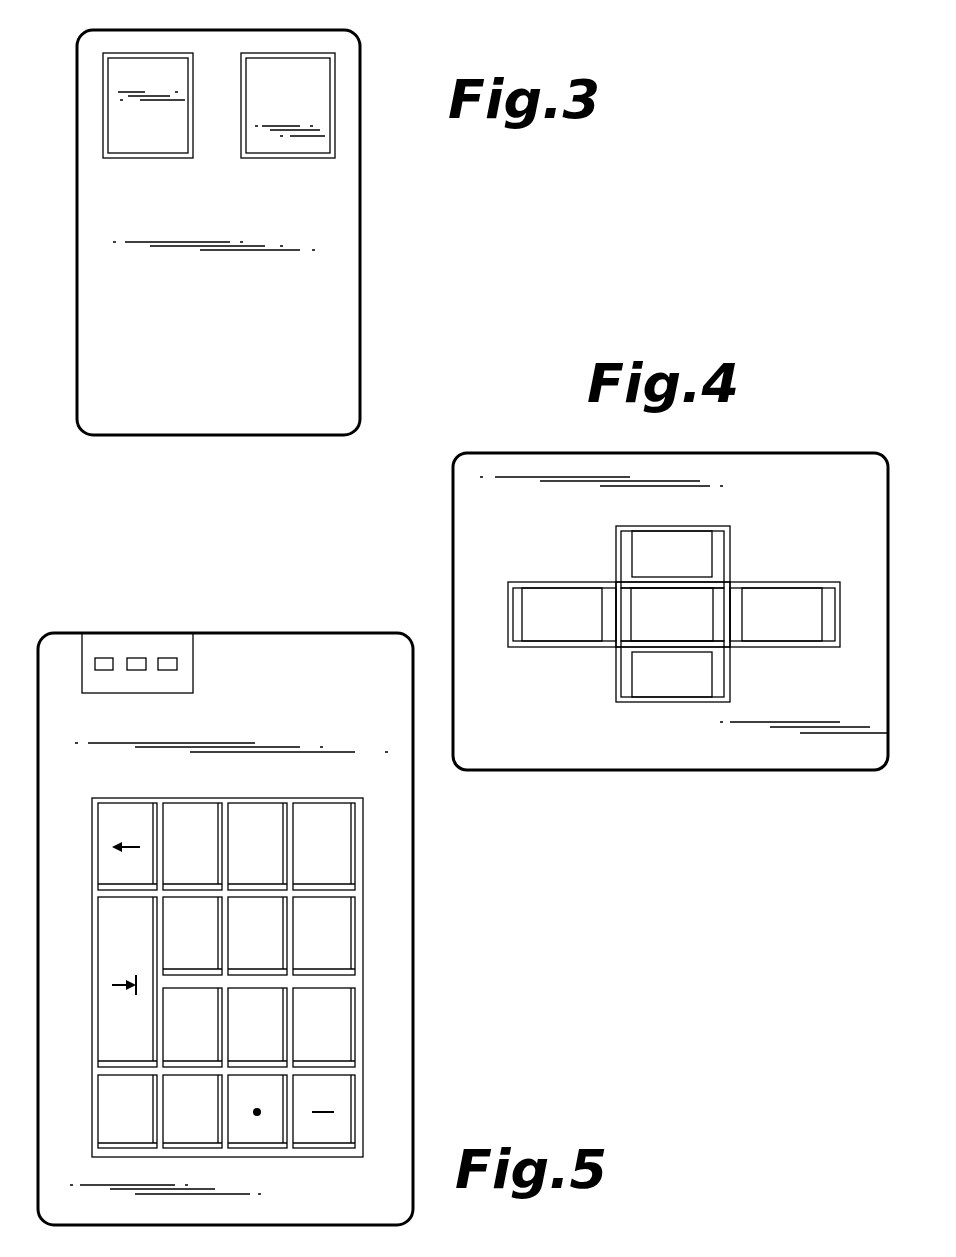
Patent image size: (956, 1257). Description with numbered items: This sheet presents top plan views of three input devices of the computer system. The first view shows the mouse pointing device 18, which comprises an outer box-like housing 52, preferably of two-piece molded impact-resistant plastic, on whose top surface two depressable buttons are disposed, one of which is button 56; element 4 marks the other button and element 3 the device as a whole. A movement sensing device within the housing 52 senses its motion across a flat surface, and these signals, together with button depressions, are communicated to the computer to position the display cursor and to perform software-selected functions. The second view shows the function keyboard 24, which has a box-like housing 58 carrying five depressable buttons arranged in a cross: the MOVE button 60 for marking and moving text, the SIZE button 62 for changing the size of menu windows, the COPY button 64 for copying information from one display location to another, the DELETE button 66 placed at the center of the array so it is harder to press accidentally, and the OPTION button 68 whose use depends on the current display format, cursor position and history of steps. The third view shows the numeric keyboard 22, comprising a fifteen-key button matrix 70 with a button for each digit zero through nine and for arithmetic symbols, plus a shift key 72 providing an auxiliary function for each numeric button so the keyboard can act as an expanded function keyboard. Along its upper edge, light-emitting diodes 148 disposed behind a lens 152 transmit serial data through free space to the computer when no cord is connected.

In FIG. 3, the portable terminal 3 is at (93, 290).
In FIG. 3, the first display window 4 is at (122, 118).
In FIG. 3, the mouse pointing device 18 is at (361, 272).
In FIG. 3, the outer box-like housing 52 is at (342, 205).
In FIG. 3, the depressable button 56 is at (317, 82).
In FIG. 4, the function keyboard 24 is at (563, 452).
In FIG. 4, the box-like housing 58 is at (525, 755).
In FIG. 4, the button 60 is at (557, 595).
In FIG. 4, the button 62 is at (690, 540).
In FIG. 4, the button 64 is at (762, 600).
In FIG. 4, the button 66 is at (700, 630).
In FIG. 4, the button 68 is at (678, 686).
In FIG. 5, the numeric keyboard 22 is at (413, 937).
In FIG. 5, the button matrix 70 is at (186, 794).
In FIG. 5, the shift key 72 is at (110, 917).
In FIG. 5, the light-emitting diode 148 is at (167, 655).
In FIG. 5, the lens 152 is at (123, 648).